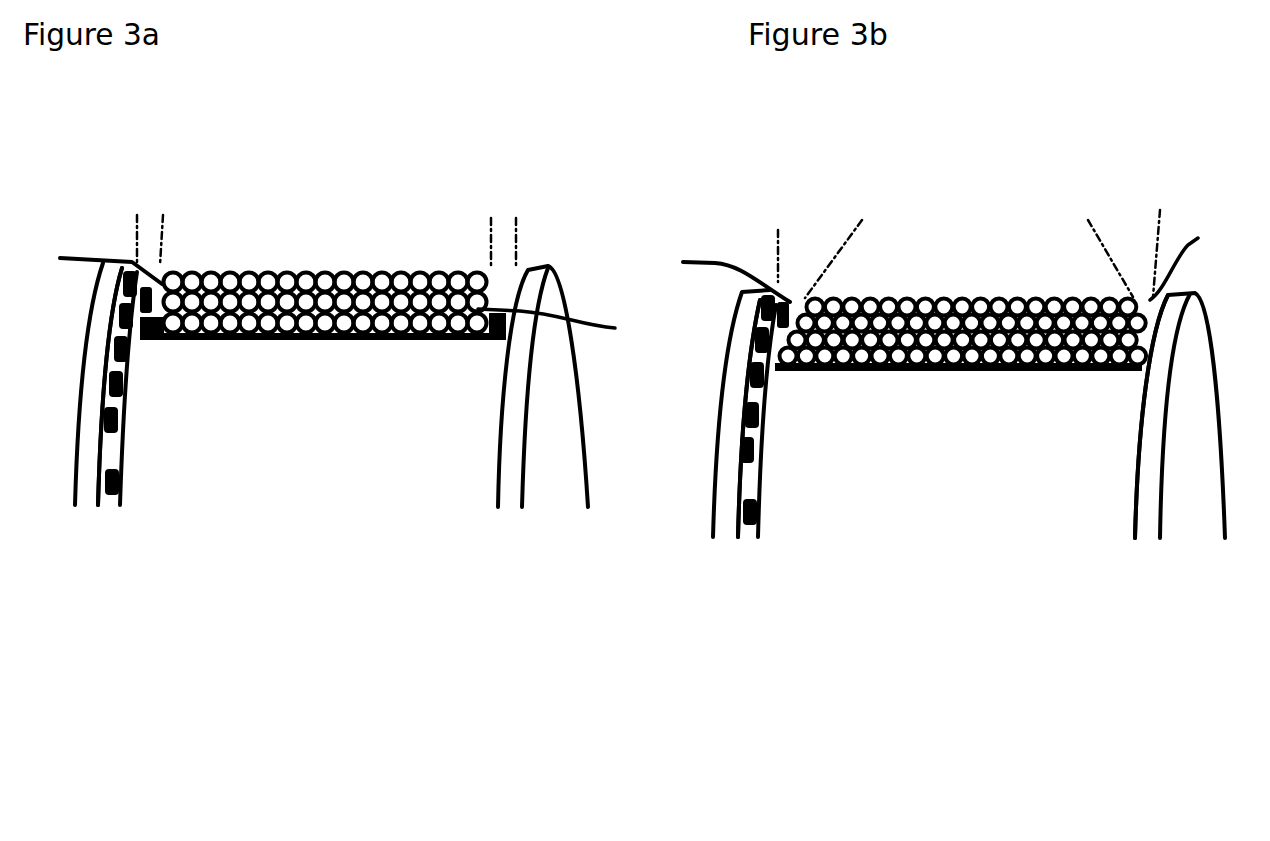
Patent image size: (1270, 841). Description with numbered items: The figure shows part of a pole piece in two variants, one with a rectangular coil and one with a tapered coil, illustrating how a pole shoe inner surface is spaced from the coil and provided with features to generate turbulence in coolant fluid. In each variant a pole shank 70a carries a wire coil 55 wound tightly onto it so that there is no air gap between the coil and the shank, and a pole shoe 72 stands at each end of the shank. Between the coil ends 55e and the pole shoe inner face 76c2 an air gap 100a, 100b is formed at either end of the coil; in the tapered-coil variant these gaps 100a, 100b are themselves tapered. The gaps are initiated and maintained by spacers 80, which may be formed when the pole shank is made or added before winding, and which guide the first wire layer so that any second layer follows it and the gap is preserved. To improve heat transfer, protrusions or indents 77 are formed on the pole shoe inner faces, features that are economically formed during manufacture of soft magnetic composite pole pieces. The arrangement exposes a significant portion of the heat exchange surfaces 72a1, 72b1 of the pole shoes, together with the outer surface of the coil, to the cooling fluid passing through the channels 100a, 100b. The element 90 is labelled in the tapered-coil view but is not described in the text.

In FIG. 3A, the wire coil 55 is at (313, 272).
In FIG. 3B, the wire coil 55 is at (946, 300).
In FIG. 3A, the coil end 55e is at (342, 292).
In FIG. 3B, the coil end 55e is at (945, 262).
In FIG. 3A, the spacer 80 is at (505, 335).
In FIG. 3A, the protrusions or indents 77 is at (135, 360).
In FIG. 3B, the protrusions or indents 77 is at (760, 372).
In FIG. 3A, the pole shank 70a is at (355, 341).
In FIG. 3B, the pole shank 70a is at (985, 372).
In FIG. 3A, the pole shoe inner face 76c2 is at (492, 437).
In FIG. 3A, the heat exchange surface 72a1 is at (110, 445).
In FIG. 3B, the heat exchange surface 72a1 is at (750, 475).
In FIG. 3B, the heat exchange surface 72b1 is at (1135, 450).
In FIG. 3A, the pole shoe 72 is at (75, 512).
In FIG. 3B, the pole shoe 72 is at (722, 527).
In FIG. 3B, the fastening region 90 is at (903, 290).
In FIG. 3A, the air gap 100a is at (152, 262).
In FIG. 3B, the air gap 100a is at (800, 287).
In FIG. 3A, the air gap 100b is at (507, 272).
In FIG. 3B, the air gap 100b is at (1144, 285).